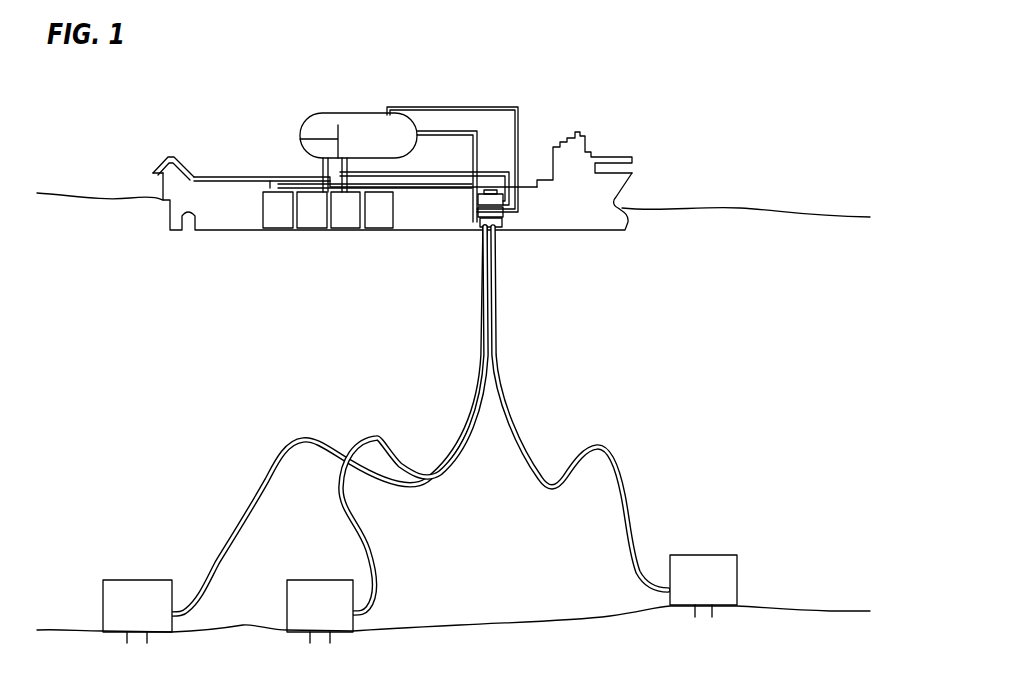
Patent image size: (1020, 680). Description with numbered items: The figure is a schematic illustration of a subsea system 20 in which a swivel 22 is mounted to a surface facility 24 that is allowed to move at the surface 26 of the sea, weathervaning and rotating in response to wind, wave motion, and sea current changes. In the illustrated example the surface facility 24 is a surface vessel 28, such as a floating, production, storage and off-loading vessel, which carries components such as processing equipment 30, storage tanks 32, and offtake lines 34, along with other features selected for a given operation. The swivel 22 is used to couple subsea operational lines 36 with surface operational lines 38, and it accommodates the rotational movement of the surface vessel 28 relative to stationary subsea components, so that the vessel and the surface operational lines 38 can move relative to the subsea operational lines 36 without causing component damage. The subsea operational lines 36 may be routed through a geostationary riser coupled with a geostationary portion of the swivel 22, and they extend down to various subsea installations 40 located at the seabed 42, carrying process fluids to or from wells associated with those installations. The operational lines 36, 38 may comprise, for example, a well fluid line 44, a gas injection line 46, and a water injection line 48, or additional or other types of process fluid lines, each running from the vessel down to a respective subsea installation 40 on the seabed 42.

The subsea system 20 is at (705, 118).
The swivel 22 is at (478, 233).
The surface facility 24 is at (565, 90).
The surface of the sea 26 is at (640, 200).
The surface vessel 28 is at (575, 162).
The processing equipment 30 is at (343, 112).
The storage tanks 32 is at (272, 232).
The offtake lines 34 is at (183, 157).
The subsea operational lines 36 is at (518, 402).
The surface operational lines 38 is at (450, 106).
The subsea installations 40 is at (103, 605).
The seabed 42 is at (828, 612).
The well fluid line 44 is at (235, 512).
The gas injection line 46 is at (357, 520).
The water injection line 48 is at (632, 500).